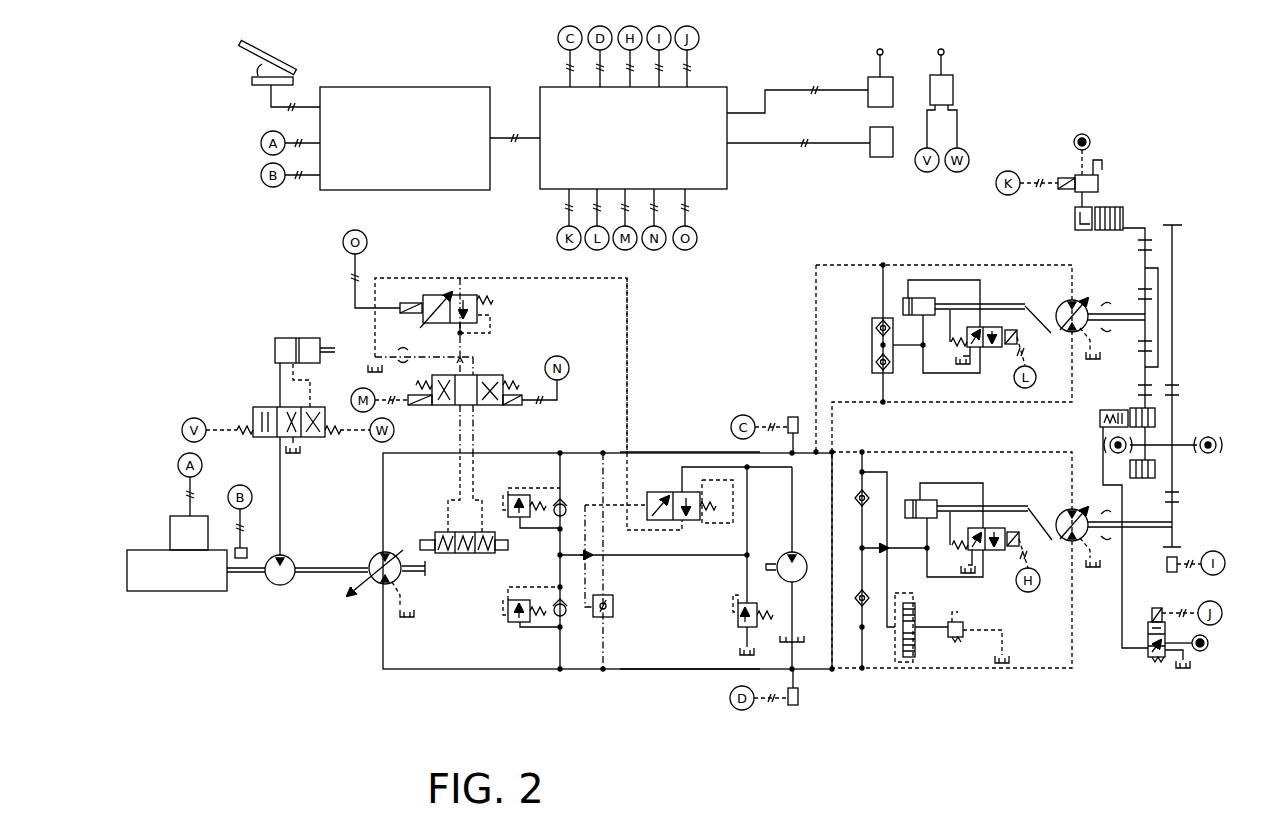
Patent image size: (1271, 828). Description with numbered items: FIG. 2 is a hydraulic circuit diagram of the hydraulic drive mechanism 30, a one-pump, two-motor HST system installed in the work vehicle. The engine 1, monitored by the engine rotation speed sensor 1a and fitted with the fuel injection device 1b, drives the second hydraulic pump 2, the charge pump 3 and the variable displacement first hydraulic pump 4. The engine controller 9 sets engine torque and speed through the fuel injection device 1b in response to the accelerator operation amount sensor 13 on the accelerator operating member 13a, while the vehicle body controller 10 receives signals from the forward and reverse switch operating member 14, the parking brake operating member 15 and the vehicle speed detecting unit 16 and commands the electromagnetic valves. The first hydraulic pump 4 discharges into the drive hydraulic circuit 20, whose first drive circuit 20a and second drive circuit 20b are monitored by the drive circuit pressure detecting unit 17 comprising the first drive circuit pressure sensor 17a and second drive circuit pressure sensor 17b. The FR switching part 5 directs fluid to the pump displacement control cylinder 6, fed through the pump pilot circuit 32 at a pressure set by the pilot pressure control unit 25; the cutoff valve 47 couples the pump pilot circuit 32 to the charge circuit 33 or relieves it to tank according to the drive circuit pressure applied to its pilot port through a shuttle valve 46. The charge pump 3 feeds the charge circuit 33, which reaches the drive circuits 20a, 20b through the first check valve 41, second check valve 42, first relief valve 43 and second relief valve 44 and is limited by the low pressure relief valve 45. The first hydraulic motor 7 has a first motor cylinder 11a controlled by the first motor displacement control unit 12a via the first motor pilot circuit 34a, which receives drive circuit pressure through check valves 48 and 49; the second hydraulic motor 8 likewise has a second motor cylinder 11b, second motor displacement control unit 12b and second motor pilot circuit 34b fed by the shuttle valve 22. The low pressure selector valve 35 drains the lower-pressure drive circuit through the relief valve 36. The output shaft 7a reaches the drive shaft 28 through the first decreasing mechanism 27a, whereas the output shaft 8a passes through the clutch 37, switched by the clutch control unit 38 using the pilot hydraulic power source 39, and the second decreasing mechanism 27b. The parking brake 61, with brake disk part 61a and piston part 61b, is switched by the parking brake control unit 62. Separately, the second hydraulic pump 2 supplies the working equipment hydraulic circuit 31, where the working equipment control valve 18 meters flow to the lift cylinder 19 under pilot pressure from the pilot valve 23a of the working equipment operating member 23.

The engine 1 is at (218, 592).
The engine rotation speed sensor 1a is at (248, 550).
The fuel injection device 1b is at (208, 540).
The second hydraulic pump 2 is at (290, 556).
The charge pump 3 is at (800, 552).
The first hydraulic pump 4 is at (392, 551).
The FR switching part 5 is at (490, 405).
The pump displacement control cylinder 6 is at (485, 554).
The first hydraulic motor 7 is at (1068, 543).
The output shaft 7a is at (1112, 532).
The second hydraulic motor 8 is at (1071, 334).
The output shaft 8a is at (1117, 324).
The engine controller 9 is at (440, 87).
The vehicle body controller 10 is at (538, 98).
The first motor cylinder 11a is at (888, 552).
The second motor cylinder 11b is at (903, 307).
The first motor displacement control unit 12a is at (990, 551).
The second motor displacement control unit 12b is at (990, 348).
The accelerator operation amount sensor 13 is at (258, 88).
The accelerator operating member 13a is at (272, 60).
The forward and reverse switch operating member 14 is at (868, 66).
The parking brake operating member 15 is at (883, 157).
The vehicle speed detecting unit 16 is at (1167, 565).
The drive circuit pressure detecting unit 17 is at (781, 405).
The first drive circuit pressure sensor 17a is at (793, 417).
The second drive circuit pressure sensor 17b is at (800, 697).
The working equipment control valve 18 is at (318, 440).
The lift cylinder 19 is at (283, 338).
The drive hydraulic circuit 20 is at (713, 444).
The first drive circuit 20a is at (693, 451).
The second drive circuit 20b is at (700, 671).
The shuttle valve 22 is at (872, 346).
The working equipment operating member 23 is at (947, 62).
The pilot valve 23a is at (953, 88).
The pilot pressure control unit 25 is at (440, 295).
The first decreasing mechanism 27a is at (1182, 522).
The second decreasing mechanism 27b is at (1157, 228).
The drive shaft 28 is at (1202, 437).
The hydraulic drive mechanism 30 is at (140, 95).
The working equipment hydraulic circuit 31 is at (280, 457).
The pump pilot circuit 32 is at (558, 278).
The charge circuit 33 is at (700, 557).
The first motor pilot circuit 34a is at (966, 578).
The second motor pilot circuit 34b is at (955, 374).
The low pressure selector valve 35 is at (918, 640).
The relief valve 36 is at (962, 645).
The clutch 37 is at (1115, 207).
The clutch control unit 38 is at (1075, 173).
The pilot hydraulic power source 39 is at (1082, 133).
The first check valve 41 is at (567, 504).
The second check valve 42 is at (567, 614).
The first relief valve 43 is at (528, 495).
The second relief valve 44 is at (525, 625).
The low pressure relief valve 45 is at (738, 622).
The filter 46 is at (614, 606).
The cutoff valve 47 is at (668, 490).
The check valve 48 is at (857, 505).
The check valve 49 is at (857, 606).
The parking brake 61 is at (1159, 463).
The brake disk part 61a is at (1135, 407).
The piston part 61b is at (1100, 418).
The parking brake control unit 62 is at (1148, 656).